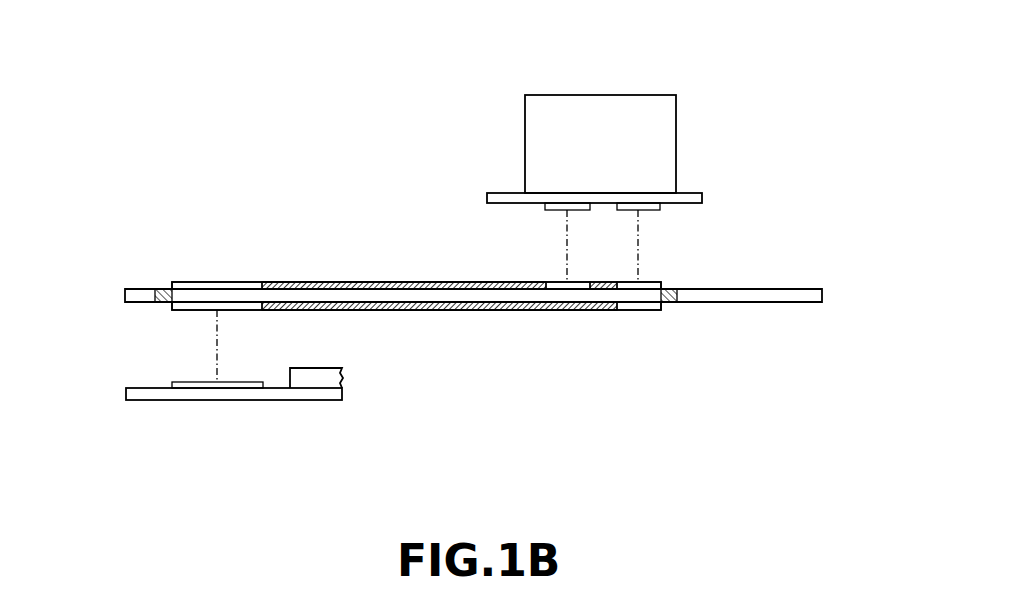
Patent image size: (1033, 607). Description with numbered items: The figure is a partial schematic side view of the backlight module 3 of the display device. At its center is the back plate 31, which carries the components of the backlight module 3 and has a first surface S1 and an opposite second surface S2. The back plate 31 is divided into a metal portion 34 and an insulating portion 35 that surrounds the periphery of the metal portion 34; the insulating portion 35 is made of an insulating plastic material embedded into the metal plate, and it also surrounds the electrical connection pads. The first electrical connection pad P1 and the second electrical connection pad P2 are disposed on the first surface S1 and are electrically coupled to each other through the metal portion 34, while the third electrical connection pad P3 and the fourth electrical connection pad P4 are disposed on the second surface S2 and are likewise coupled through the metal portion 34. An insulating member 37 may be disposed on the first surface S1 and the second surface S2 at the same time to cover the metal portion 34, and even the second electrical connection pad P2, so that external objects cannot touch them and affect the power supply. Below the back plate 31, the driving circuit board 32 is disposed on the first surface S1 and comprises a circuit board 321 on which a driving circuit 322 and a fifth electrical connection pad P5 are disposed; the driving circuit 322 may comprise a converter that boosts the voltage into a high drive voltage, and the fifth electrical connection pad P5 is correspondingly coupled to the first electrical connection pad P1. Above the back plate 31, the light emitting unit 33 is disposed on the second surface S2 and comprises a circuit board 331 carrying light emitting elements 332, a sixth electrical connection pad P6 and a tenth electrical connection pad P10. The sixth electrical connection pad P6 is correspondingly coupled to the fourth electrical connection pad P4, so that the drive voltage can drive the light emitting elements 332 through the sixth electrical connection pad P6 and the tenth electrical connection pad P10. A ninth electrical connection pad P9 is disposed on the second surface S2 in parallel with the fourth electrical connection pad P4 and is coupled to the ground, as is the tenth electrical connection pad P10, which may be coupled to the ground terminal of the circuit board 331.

The backlight module 3 is at (232, 66).
The back plate 31 is at (812, 296).
The driving circuit board 32 is at (188, 413).
The circuit board 321 is at (278, 398).
The driving circuit 322 is at (320, 378).
The light emitting unit 33 is at (614, 135).
The circuit board 331 is at (690, 192).
The light emitting element 332 is at (668, 105).
The metal portion 34 is at (298, 292).
The insulating portion 35 is at (165, 289).
The insulating member 37 is at (432, 284).
The first surface S1 is at (392, 311).
The second surface S2 is at (390, 284).
The first electrical connection pad P1 is at (205, 308).
The second electrical connection pad P2 is at (645, 310).
The third electrical connection pad P3 is at (200, 282).
The fourth electrical connection pad P4 is at (658, 283).
The fifth electrical connection pad P5 is at (200, 381).
The sixth electrical connection pad P6 is at (655, 211).
The ninth electrical connection pad P9 is at (558, 283).
The tenth electrical connection pad P10 is at (548, 211).